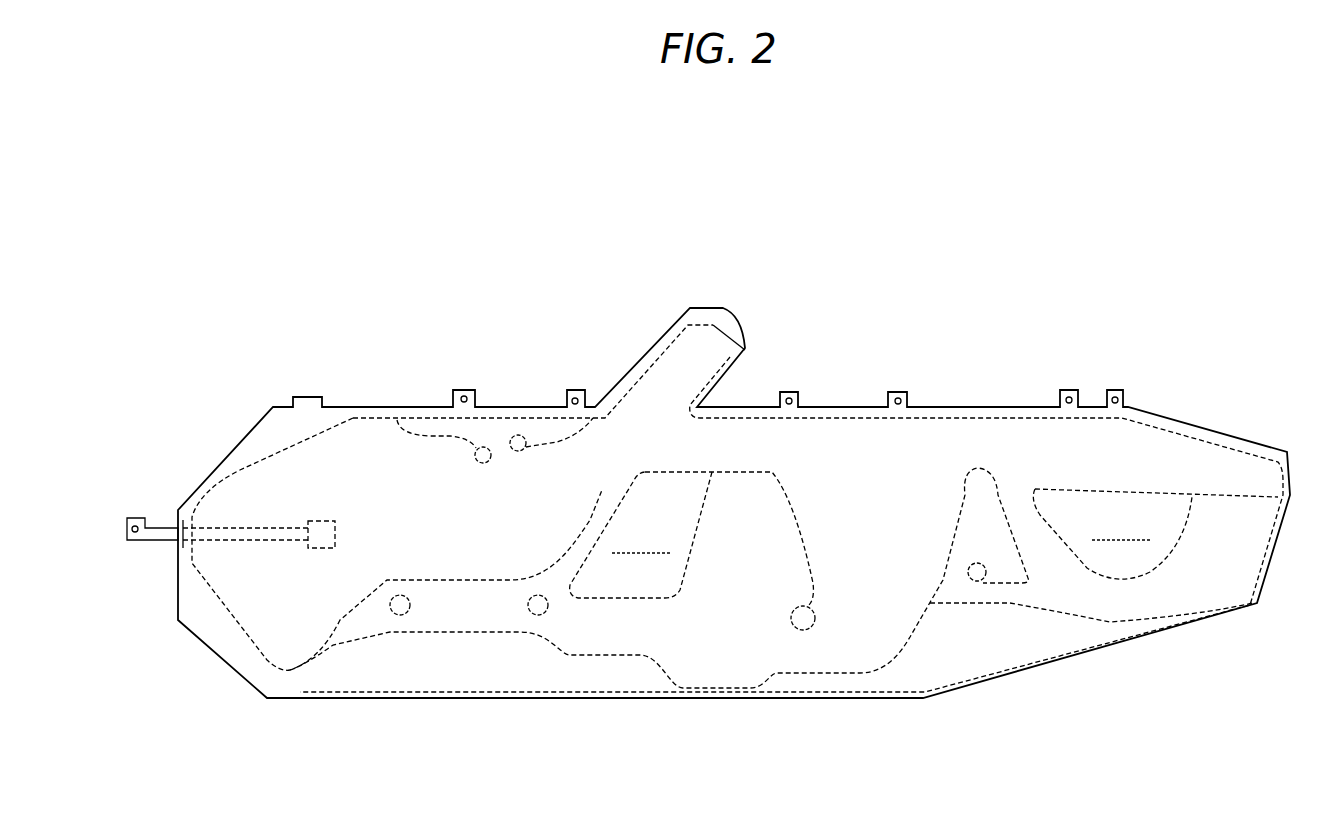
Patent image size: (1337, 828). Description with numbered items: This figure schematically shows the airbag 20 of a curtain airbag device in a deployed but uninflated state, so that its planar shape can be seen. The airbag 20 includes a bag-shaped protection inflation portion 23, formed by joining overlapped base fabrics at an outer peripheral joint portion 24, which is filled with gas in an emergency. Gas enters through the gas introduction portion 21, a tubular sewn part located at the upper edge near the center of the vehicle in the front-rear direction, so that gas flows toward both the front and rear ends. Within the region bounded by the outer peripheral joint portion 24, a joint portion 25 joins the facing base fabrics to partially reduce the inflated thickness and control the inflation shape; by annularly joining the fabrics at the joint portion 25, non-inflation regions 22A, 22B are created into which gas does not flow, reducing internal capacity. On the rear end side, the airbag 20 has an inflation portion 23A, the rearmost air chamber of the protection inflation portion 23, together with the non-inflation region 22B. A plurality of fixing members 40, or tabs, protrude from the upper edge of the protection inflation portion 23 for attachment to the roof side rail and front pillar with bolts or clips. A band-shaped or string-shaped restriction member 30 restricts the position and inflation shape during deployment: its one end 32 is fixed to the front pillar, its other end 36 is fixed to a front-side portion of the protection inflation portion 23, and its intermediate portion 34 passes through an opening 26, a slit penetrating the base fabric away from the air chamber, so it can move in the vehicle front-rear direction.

The airbag 20 is at (1031, 340).
The gas introduction portion 21 is at (663, 372).
The non-inflation region 22A is at (692, 539).
The non-inflation region 22B is at (1155, 534).
The protection inflation portion 23 is at (893, 508).
The inflation portion 23A is at (1220, 470).
The outer peripheral joint portion 24 is at (1160, 425).
The joint portion 25 is at (430, 435).
The opening 26 is at (178, 545).
The restriction member 30 is at (160, 528).
The one end 32 is at (133, 517).
The intermediate portion 34 is at (250, 540).
The other end 36 is at (322, 548).
The fixing member 40 is at (302, 396).